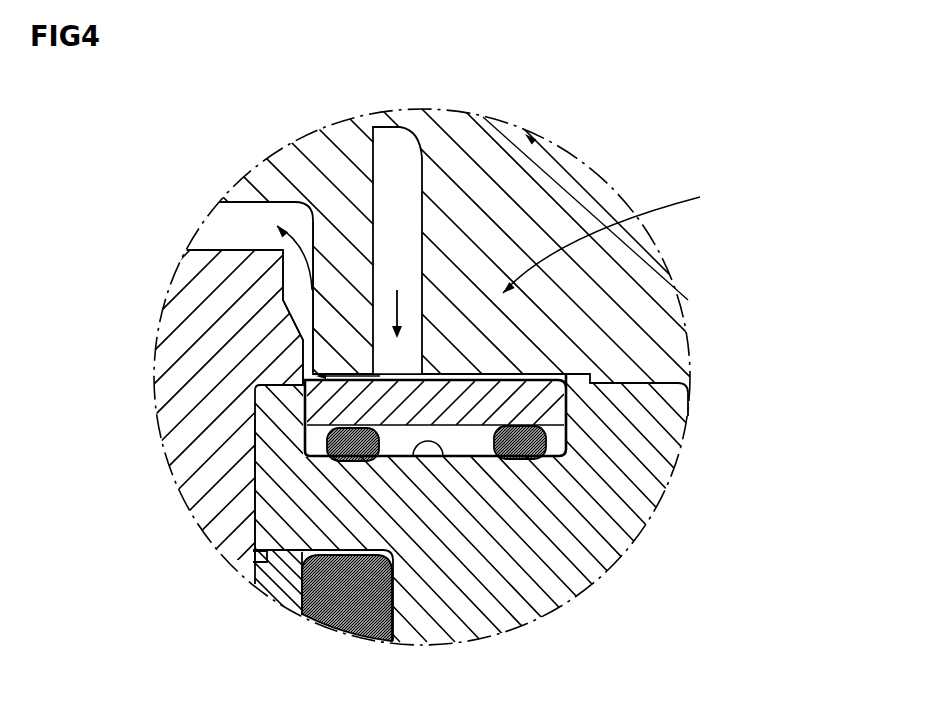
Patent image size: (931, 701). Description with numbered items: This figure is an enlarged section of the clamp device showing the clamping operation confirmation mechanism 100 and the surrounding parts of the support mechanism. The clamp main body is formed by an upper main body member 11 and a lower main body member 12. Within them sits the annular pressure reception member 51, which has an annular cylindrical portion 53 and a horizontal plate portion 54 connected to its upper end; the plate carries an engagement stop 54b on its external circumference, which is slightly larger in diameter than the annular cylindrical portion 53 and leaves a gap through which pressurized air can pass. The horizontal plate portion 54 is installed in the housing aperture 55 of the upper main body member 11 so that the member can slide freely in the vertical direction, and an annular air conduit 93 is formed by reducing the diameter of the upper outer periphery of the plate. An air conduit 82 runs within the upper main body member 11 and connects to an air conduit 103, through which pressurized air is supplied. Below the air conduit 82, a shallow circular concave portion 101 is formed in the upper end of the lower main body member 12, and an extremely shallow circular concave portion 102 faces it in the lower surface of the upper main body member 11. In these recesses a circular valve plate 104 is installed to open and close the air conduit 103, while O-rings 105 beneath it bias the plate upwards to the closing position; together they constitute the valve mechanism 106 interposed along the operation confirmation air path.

The upper main body member 11 is at (675, 343).
The lower main body member 12 is at (663, 440).
The annular pressure reception member 51 is at (186, 417).
The annular cylindrical portion 53 is at (210, 417).
The horizontal plate portion 54 is at (190, 298).
The engagement stop 54b is at (287, 360).
The housing aperture 55 is at (242, 204).
The air conduit 82 is at (562, 182).
The annular air conduit 93 is at (290, 284).
The clamping operation confirmation mechanism 100 is at (621, 239).
The circular concave portion 101 is at (448, 462).
The circular concave portion 102 is at (557, 375).
The air conduit 103 is at (422, 205).
The valve plate 104 is at (455, 385).
The O-rings 105 is at (510, 447).
The valve mechanism 106 is at (427, 360).